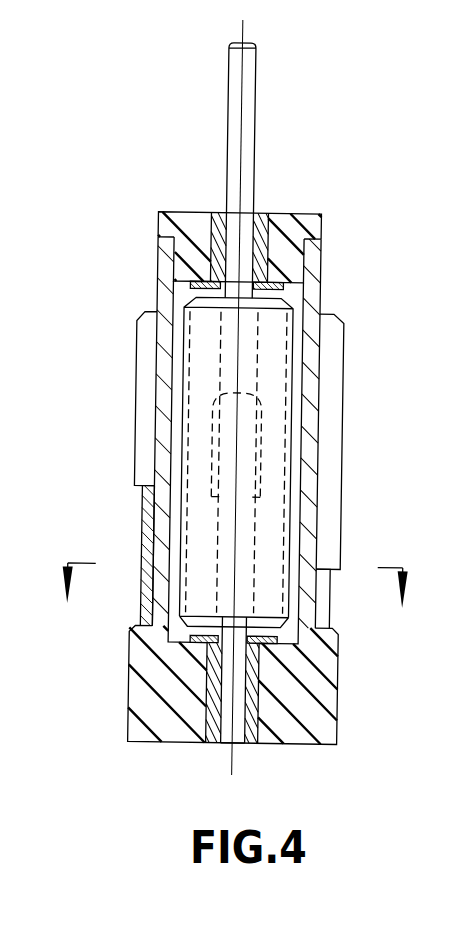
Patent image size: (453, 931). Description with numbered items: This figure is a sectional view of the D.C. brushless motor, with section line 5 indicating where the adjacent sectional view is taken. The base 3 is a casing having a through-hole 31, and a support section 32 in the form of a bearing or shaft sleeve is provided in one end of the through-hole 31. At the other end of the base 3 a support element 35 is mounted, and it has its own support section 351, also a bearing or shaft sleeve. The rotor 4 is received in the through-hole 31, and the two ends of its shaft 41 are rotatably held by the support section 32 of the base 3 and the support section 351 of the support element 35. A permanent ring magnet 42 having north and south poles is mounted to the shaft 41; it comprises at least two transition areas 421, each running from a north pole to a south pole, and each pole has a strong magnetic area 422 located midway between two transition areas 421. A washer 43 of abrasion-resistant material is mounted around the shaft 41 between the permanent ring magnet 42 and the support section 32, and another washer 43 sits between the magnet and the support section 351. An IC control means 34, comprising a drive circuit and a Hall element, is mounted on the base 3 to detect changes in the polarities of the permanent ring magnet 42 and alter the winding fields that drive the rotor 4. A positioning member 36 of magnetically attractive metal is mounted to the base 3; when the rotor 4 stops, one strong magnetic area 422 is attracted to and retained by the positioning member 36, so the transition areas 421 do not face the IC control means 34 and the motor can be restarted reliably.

The shaft 41 is at (233, 153).
The support section 351 is at (260, 213).
The support element 35 is at (320, 213).
The base 3 is at (326, 264).
The through-hole 31 is at (327, 304).
The washer 43 is at (194, 284).
The permanent ring magnet 42 is at (187, 309).
The rotor 4 is at (229, 440).
The transition area 421 is at (310, 359).
The strong magnetic area 422 is at (310, 397).
The positioning member 36 is at (147, 535).
The IC control means 34 is at (335, 592).
The support section 32 is at (262, 735).
The section line 5- 5 is at (237, 609).